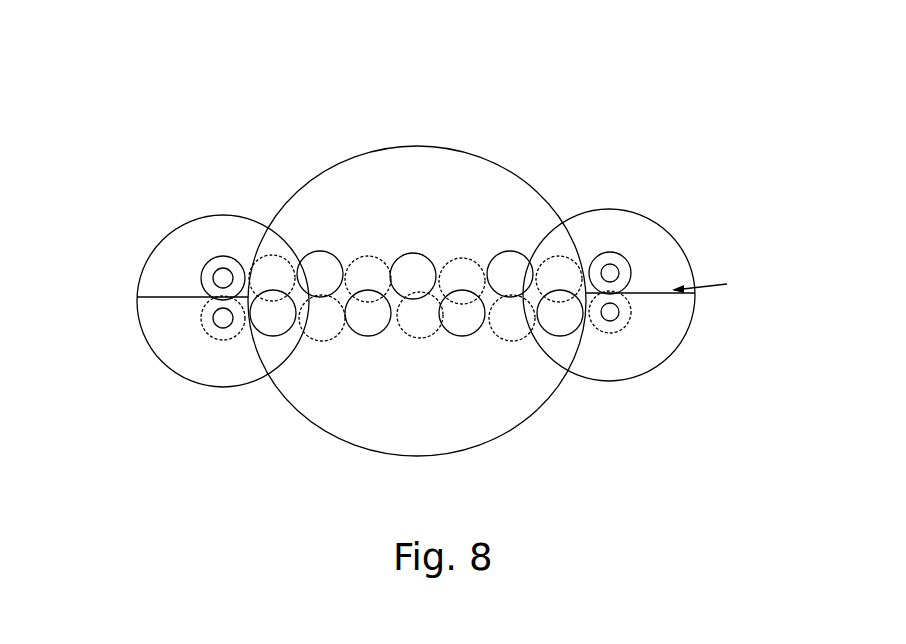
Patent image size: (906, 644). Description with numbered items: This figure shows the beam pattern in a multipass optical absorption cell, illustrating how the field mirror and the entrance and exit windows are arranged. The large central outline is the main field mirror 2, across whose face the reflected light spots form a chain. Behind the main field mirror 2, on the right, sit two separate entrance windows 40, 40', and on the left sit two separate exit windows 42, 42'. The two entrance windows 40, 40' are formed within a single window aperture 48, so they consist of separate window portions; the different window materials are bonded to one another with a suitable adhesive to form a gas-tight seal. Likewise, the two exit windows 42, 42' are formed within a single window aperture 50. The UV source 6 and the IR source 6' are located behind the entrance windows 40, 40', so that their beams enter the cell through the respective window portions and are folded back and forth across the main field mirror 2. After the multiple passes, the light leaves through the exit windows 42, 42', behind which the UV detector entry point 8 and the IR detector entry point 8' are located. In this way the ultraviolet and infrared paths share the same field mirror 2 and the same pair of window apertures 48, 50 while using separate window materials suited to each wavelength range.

The main field mirror 2 is at (350, 158).
The UV source 6 is at (671, 251).
The IR source 6' is at (679, 328).
The UV detector entry point 8 is at (151, 251).
The IR detector entry point 8' is at (146, 318).
The entrance window 40 is at (618, 188).
The entrance window 40' is at (632, 395).
The exit window 42 is at (203, 199).
The exit window 42' is at (202, 377).
The window aperture 48 is at (605, 367).
The window aperture 50 is at (237, 375).